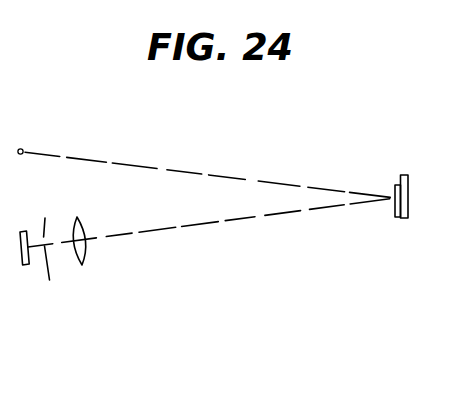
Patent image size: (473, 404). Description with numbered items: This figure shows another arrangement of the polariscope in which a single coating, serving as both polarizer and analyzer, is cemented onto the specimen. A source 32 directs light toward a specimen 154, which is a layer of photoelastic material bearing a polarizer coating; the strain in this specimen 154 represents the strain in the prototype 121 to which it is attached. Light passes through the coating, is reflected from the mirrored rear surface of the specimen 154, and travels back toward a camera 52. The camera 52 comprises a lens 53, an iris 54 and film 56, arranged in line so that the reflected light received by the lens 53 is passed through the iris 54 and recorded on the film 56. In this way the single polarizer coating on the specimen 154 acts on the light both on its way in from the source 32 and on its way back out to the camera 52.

The source 32 is at (22, 149).
The camera 52 is at (74, 298).
The lens 53 is at (78, 217).
The iris 54 is at (44, 218).
The film 56 is at (26, 266).
The specimen 154 is at (396, 182).
The prototype 121 is at (408, 212).